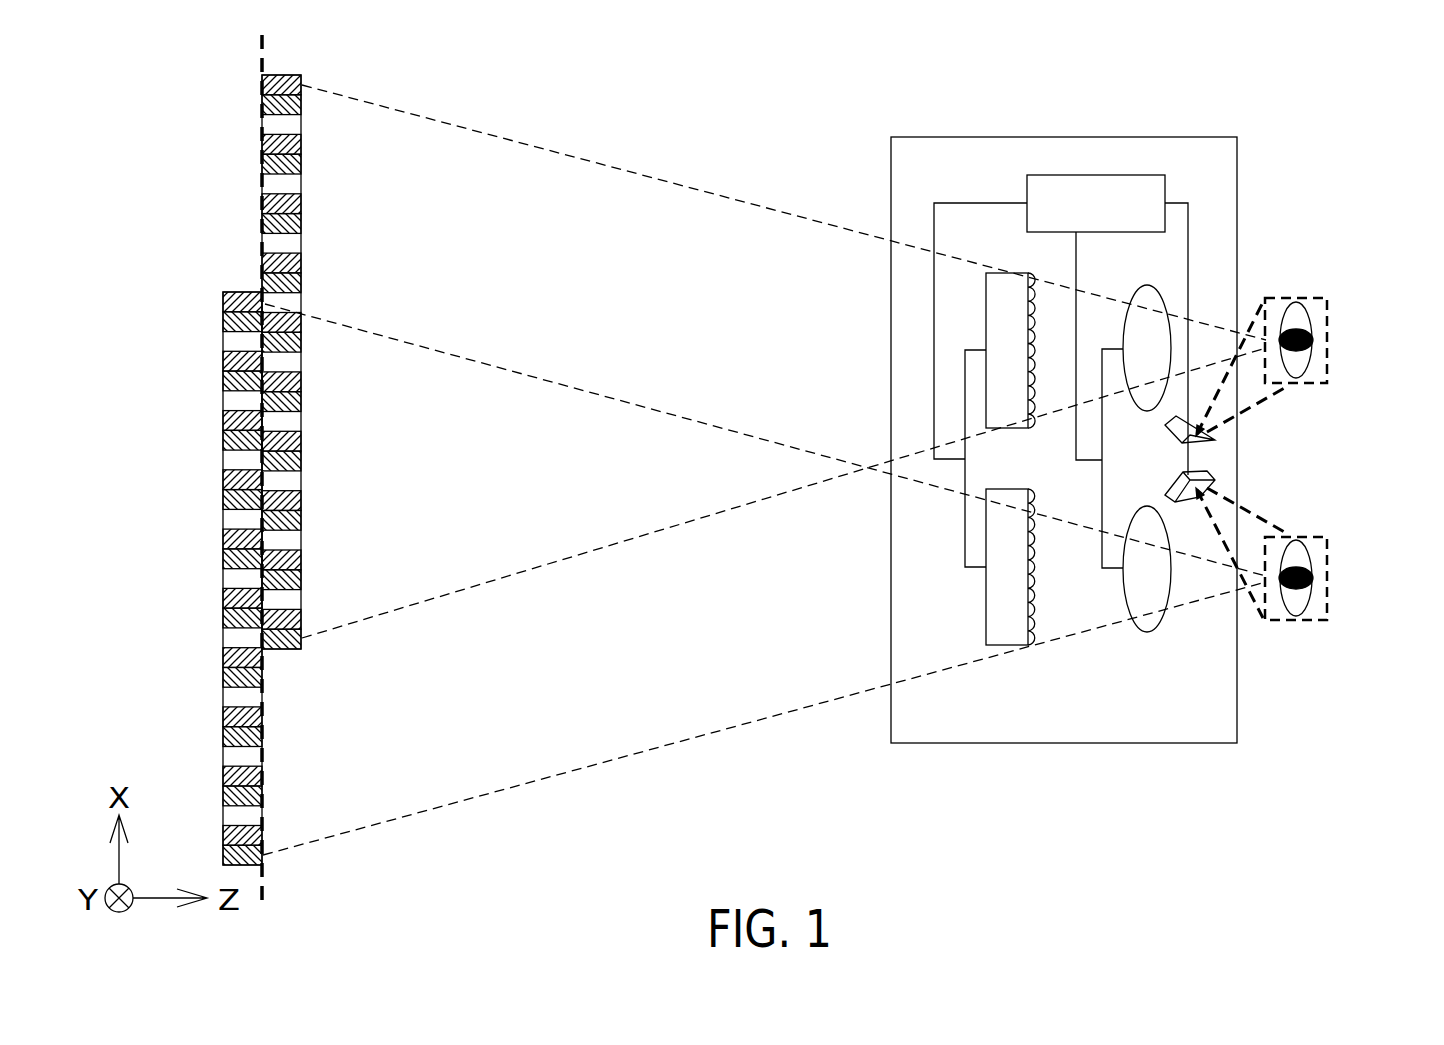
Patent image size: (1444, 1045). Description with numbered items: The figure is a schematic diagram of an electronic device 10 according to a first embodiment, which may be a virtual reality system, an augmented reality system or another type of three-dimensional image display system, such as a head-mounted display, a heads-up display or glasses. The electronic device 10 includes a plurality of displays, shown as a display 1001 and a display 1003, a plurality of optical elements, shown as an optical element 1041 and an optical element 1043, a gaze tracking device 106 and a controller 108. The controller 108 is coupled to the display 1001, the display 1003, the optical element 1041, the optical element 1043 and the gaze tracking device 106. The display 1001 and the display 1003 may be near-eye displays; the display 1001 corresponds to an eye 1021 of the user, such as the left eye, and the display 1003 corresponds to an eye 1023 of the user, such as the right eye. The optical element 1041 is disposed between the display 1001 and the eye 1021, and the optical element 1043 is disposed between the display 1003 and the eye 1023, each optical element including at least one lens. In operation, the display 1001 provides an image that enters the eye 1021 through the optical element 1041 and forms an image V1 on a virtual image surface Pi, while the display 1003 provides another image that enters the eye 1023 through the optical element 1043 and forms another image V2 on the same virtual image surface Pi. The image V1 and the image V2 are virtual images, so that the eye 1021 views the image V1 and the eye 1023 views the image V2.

The electronic device 10 is at (1287, 136).
The controller 108 is at (1118, 219).
The display 1001 is at (986, 300).
The display 1003 is at (986, 613).
The optical element 1041 is at (1147, 285).
The optical element 1043 is at (1147, 632).
The gaze tracking device 106 is at (1215, 442).
The eye 1021 is at (1327, 340).
The eye 1023 is at (1327, 578).
The image V1 is at (302, 185).
The image V2 is at (263, 760).
The virtual image surface Pi is at (257, 43).